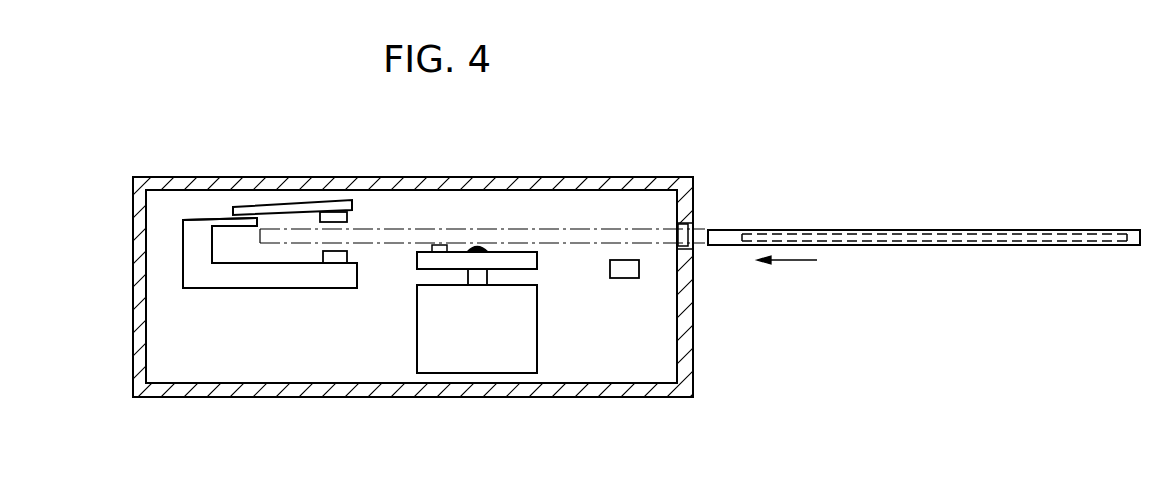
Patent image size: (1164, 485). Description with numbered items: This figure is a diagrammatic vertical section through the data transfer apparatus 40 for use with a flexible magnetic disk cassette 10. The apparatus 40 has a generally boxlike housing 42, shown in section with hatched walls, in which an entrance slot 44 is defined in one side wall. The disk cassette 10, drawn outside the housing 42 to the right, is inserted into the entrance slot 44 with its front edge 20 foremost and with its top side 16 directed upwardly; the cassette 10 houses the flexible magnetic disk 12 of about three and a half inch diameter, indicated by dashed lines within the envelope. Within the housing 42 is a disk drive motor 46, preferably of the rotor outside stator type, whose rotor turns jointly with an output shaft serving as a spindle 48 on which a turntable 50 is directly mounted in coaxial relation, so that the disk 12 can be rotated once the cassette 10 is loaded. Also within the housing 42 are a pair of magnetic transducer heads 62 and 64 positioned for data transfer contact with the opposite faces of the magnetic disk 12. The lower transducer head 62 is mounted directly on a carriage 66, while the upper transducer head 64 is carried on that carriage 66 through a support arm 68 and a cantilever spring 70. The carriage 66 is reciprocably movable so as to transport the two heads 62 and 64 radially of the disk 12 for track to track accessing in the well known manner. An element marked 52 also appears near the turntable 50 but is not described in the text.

The disk cassette 10 is at (693, 226).
The flexible magnetic disk 12 is at (975, 232).
The top side 16 is at (903, 228).
The front edge 20 is at (706, 240).
The data transfer apparatus 40 is at (620, 166).
The housing 42 is at (477, 177).
The entrance slot 44 is at (694, 250).
The disk drive motor 46 is at (488, 330).
The spindle 48 is at (476, 247).
The turntable 50 is at (538, 258).
The positioning pin 52 is at (440, 244).
The lower transducer head 62 is at (348, 257).
The upper transducer head 64 is at (348, 216).
The carriage 66 is at (347, 289).
The support arm 68 is at (275, 204).
The cantilever spring 70 is at (217, 217).